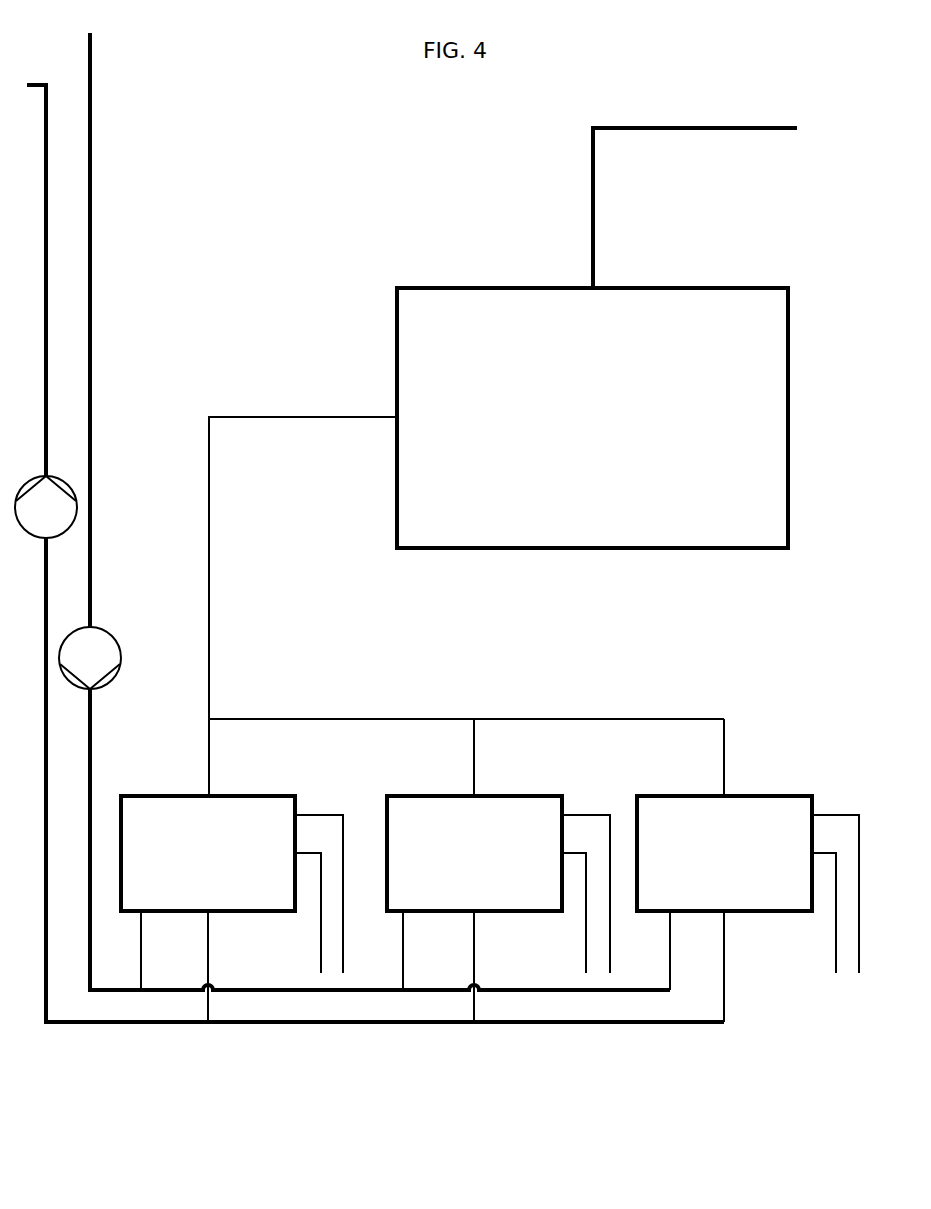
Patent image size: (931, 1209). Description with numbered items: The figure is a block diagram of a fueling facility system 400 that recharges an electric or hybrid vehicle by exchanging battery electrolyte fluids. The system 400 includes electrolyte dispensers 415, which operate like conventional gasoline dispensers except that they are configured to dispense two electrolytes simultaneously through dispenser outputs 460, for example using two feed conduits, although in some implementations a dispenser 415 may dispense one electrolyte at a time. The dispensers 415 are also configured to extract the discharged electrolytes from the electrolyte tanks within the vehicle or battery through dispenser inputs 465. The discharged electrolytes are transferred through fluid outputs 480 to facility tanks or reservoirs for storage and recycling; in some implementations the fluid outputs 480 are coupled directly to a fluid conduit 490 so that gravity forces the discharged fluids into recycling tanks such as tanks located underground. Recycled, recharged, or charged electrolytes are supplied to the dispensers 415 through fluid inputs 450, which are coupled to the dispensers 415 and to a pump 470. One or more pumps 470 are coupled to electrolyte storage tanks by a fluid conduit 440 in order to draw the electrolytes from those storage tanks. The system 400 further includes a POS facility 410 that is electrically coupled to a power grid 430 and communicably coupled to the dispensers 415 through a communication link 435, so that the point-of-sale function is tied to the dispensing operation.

The system 400 is at (590, 1077).
The POS facility 410 is at (592, 418).
The electrolyte dispenser 415 is at (466, 853).
The power grid 430 is at (724, 134).
The communication link 435 is at (211, 576).
The fluid conduit 440 is at (53, 207).
The fluid input 450 is at (466, 966).
The dispenser output 460 is at (574, 913).
The dispenser input 465 is at (586, 894).
The pump 470 is at (124, 654).
The fluid output 480 is at (406, 950).
The fluid conduit 490 is at (97, 96).